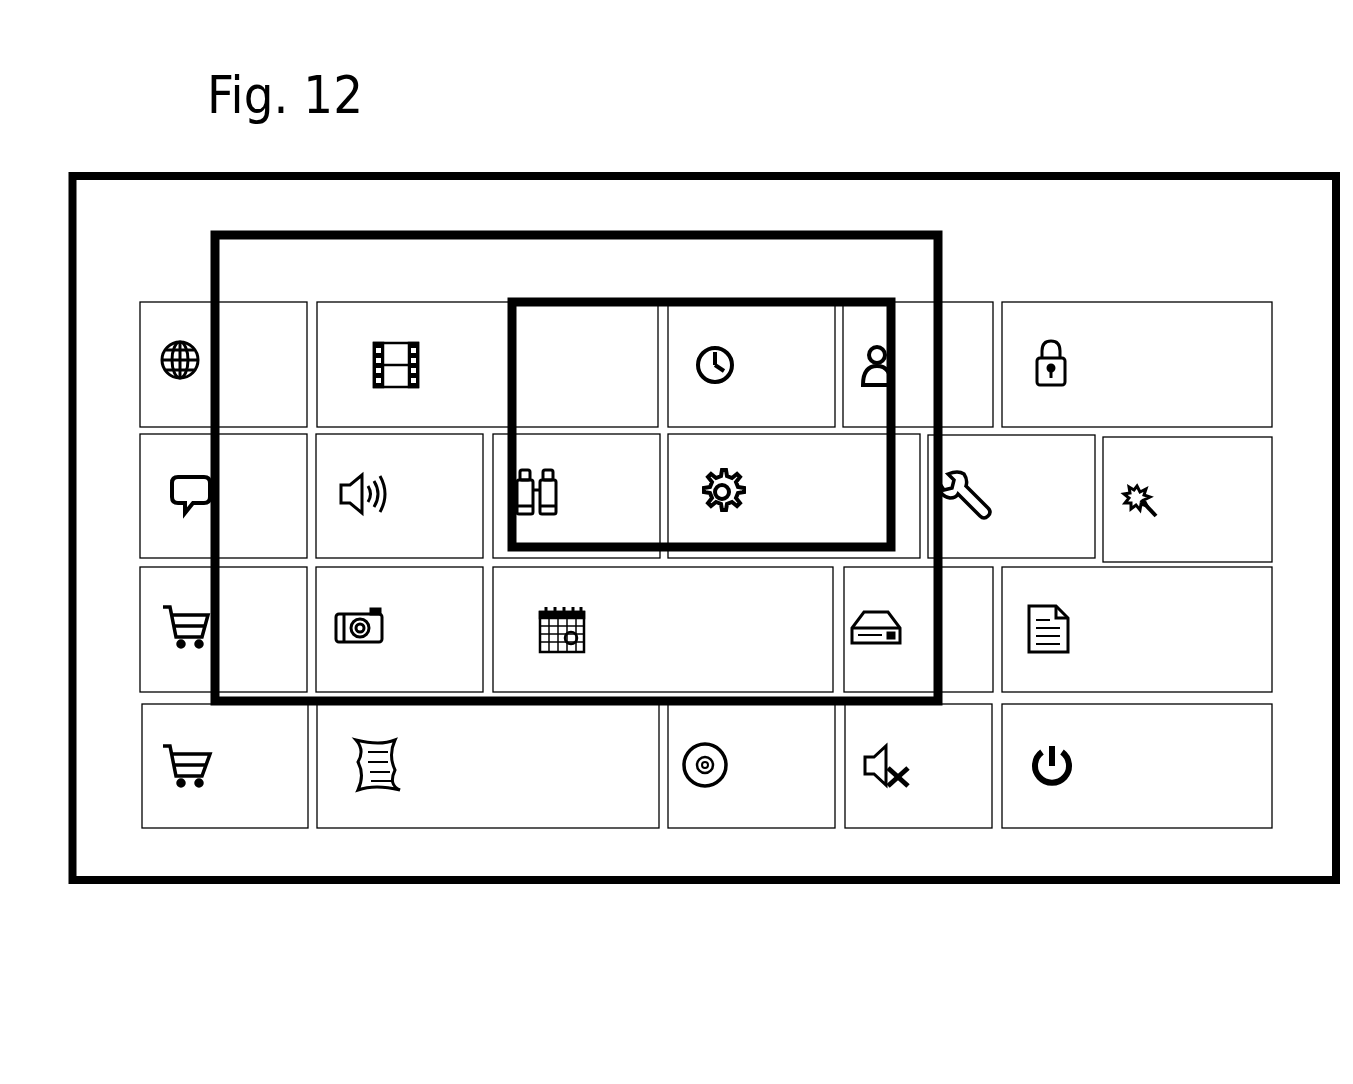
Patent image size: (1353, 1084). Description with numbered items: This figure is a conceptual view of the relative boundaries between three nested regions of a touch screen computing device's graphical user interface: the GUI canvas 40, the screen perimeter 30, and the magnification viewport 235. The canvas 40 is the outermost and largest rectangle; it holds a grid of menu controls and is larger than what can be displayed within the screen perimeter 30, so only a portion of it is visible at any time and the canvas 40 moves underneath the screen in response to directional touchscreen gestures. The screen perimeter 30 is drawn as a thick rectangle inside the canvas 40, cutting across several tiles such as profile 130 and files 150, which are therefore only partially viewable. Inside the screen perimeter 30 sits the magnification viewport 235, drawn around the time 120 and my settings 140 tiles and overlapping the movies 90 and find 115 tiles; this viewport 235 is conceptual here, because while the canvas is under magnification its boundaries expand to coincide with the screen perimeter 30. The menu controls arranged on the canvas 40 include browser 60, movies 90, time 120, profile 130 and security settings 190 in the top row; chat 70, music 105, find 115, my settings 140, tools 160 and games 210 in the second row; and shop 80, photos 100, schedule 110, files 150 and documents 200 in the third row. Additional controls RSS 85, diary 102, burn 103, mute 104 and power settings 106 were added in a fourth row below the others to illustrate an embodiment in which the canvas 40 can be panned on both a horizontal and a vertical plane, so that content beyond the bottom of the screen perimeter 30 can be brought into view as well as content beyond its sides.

The GUI canvas 40 is at (931, 172).
The screen perimeter 30 is at (941, 232).
The magnification viewport 235 is at (710, 297).
The browser 60 is at (258, 420).
The movies 90 is at (504, 420).
The time 120 is at (793, 420).
The profile 130 is at (950, 420).
The security settings tile 190 is at (1195, 420).
The chat 70 is at (260, 553).
The music 105 is at (443, 553).
The find 115 is at (617, 548).
The my settings tile 140 is at (840, 548).
The tools tile 160 is at (1053, 553).
The games tile 210 is at (1230, 555).
The shop 80 is at (260, 685).
The photos 100 is at (424, 685).
The schedule 110 is at (721, 683).
The files 150 is at (952, 685).
The documents tile 200 is at (1193, 685).
The RSS 85 is at (259, 821).
The Diary 102 is at (544, 821).
The Burn 103 is at (775, 821).
The Mute 104 is at (951, 821).
The Power Settings 106 is at (1192, 821).